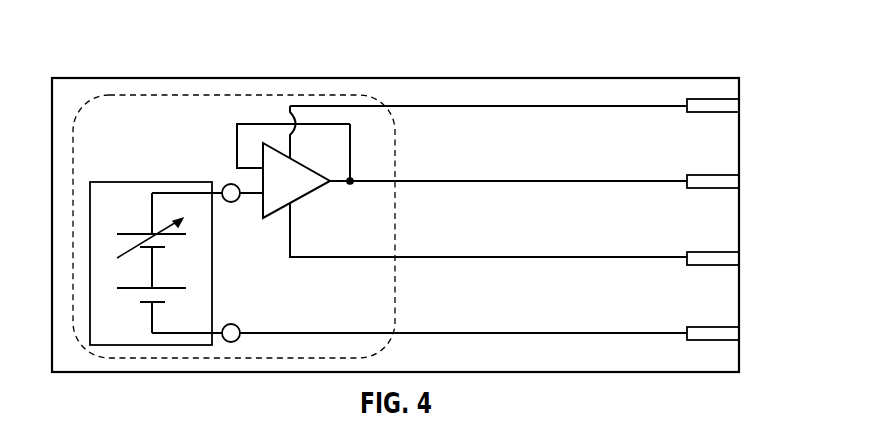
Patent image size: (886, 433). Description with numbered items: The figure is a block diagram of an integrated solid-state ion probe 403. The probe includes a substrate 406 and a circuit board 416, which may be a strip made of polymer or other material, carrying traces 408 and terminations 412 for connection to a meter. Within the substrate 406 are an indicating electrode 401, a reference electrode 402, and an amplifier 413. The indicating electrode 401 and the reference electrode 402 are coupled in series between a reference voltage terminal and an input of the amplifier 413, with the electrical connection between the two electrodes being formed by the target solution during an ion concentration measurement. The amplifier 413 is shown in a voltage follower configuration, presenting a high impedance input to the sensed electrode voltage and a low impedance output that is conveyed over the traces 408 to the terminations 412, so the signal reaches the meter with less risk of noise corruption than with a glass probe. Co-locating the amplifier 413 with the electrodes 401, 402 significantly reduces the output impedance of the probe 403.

The integrated solid-state ion probe 403 is at (133, 29).
The substrate 406 is at (192, 95).
The indicating electrode 401 is at (138, 233).
The reference electrode 402 is at (132, 290).
The traces 408 is at (560, 105).
The amplifier 413 is at (302, 198).
The terminations 412 is at (732, 182).
The circuit board 416 is at (652, 76).